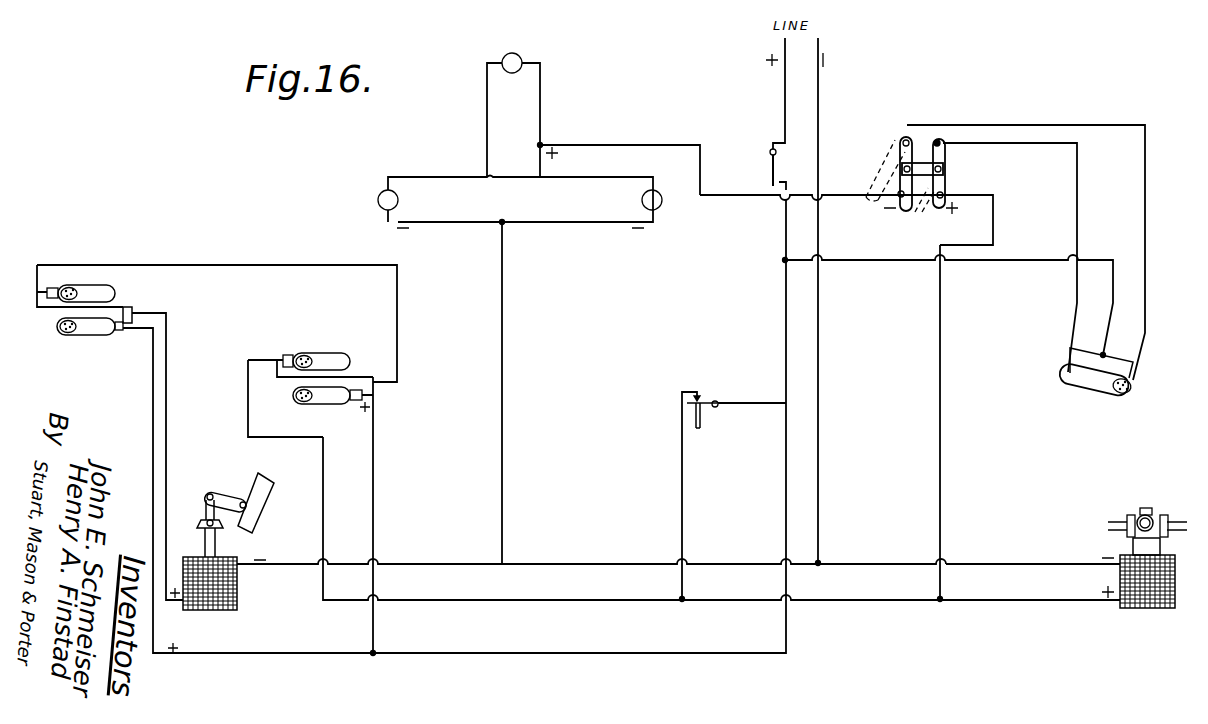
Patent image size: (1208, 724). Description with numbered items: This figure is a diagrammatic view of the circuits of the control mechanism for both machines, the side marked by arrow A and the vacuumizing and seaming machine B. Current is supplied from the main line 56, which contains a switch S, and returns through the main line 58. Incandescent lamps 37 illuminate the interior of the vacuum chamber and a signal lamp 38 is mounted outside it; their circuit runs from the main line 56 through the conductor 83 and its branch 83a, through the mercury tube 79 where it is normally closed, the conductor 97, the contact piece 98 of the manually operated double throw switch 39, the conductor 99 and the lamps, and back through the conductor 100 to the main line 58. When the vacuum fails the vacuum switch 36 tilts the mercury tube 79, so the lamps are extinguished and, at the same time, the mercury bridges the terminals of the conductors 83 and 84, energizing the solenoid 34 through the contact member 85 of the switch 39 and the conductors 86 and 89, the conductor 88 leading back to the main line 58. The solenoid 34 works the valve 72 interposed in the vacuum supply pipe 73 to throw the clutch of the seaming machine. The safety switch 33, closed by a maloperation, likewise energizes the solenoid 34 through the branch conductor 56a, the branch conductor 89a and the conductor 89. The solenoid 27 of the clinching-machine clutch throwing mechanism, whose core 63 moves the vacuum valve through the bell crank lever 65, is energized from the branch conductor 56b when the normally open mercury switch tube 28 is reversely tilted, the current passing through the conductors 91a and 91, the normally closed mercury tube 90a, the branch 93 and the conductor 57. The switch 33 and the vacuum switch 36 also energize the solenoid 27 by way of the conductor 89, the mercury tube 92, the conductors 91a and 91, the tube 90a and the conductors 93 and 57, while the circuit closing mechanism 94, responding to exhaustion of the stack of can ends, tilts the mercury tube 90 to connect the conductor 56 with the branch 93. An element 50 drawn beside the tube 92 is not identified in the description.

The signal lamp 38 is at (514, 50).
The incandescent electric lamps 37 is at (378, 197).
The conductor 100 is at (502, 393).
The main line 56 is at (785, 97).
The switch S is at (762, 163).
The main line conductor 58 is at (818, 86).
The conductor 99 is at (743, 197).
The manually operated double throw switch 39 is at (902, 134).
The contact piece of the double throw switch 98 is at (897, 147).
The contact member of the double throw switch 85 is at (947, 163).
The conductor 84 is at (1027, 143).
The conductor 97 is at (1145, 200).
The branch conductor 83 is at (845, 262).
The conductor 86 is at (941, 433).
The vacuum switch 36 is at (1054, 353).
The mercury tube 79 is at (1085, 378).
The branch of conductor 83 83a is at (1118, 378).
The conductor 91 is at (290, 265).
The companion mercury tube 90a is at (134, 244).
The branch conductor 93 is at (125, 305).
The tiltable mercury tube 90 is at (101, 337).
The circuit closing mechanism 94 is at (69, 344).
The conductor 57 is at (167, 393).
The fuse 50 is at (377, 336).
The mercury tube 92 is at (318, 353).
The mercury switch tube 28 is at (327, 399).
The conductor 91a is at (432, 407).
The branch conductor 56b is at (429, 474).
The conductor 89 is at (325, 488).
The conductor 88 is at (1017, 562).
The branch conductor 89a is at (678, 502).
The safety switch 33 is at (708, 418).
The branch conductor 56a is at (756, 387).
The solenoid 27 is at (238, 593).
The core of the solenoid 63 is at (217, 537).
The bell crank lever 65 is at (257, 462).
The solenoid 34 is at (1158, 610).
The valve 72 is at (1165, 506).
The vacuum supply pipe 73 is at (1113, 518).
The direction arrow A is at (297, 659).
The vacuumizing and seaming machine B is at (952, 659).